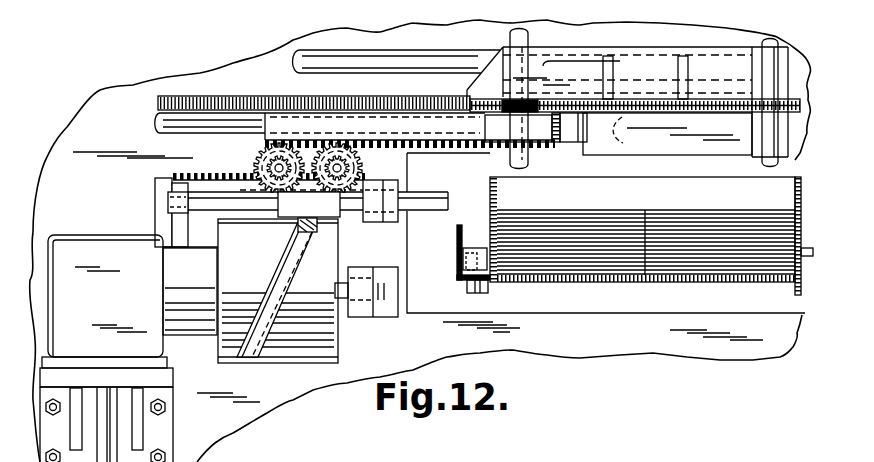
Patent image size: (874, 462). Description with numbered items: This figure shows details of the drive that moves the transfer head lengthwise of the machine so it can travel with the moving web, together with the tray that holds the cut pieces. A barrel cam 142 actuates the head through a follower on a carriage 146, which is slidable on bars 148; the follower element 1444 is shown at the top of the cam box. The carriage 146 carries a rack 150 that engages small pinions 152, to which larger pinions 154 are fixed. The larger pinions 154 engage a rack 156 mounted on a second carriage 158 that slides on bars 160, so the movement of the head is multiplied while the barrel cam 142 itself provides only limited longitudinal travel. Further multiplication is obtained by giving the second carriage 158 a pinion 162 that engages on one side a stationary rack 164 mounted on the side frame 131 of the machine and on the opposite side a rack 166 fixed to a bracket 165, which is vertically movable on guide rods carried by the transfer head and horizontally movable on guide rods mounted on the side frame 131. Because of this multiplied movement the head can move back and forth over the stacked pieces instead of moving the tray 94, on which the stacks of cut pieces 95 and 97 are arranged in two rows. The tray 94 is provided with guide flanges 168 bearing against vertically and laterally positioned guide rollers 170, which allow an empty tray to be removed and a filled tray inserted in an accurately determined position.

The stationary rack 164 is at (217, 96).
The bars 160 is at (157, 118).
The rack 156 is at (472, 147).
The pinion 162 is at (535, 115).
The bracket 165 is at (708, 63).
The rack 166 is at (667, 134).
The second carriage 158 is at (532, 132).
The rack 150 is at (190, 178).
The bars 148 is at (433, 189).
The small pinions 152 is at (263, 155).
The larger pinions 154 is at (360, 168).
The carriage 146 is at (330, 207).
The barrel cam 142 is at (297, 348).
The inclined arm 1444 is at (297, 227).
The tray 94 is at (605, 283).
The stack of cut pieces 95 is at (580, 198).
The stack of cut pieces 97 is at (713, 228).
The guide flanges 168 is at (456, 240).
The guide rollers 170 is at (466, 288).
The side frame 131 is at (642, 343).